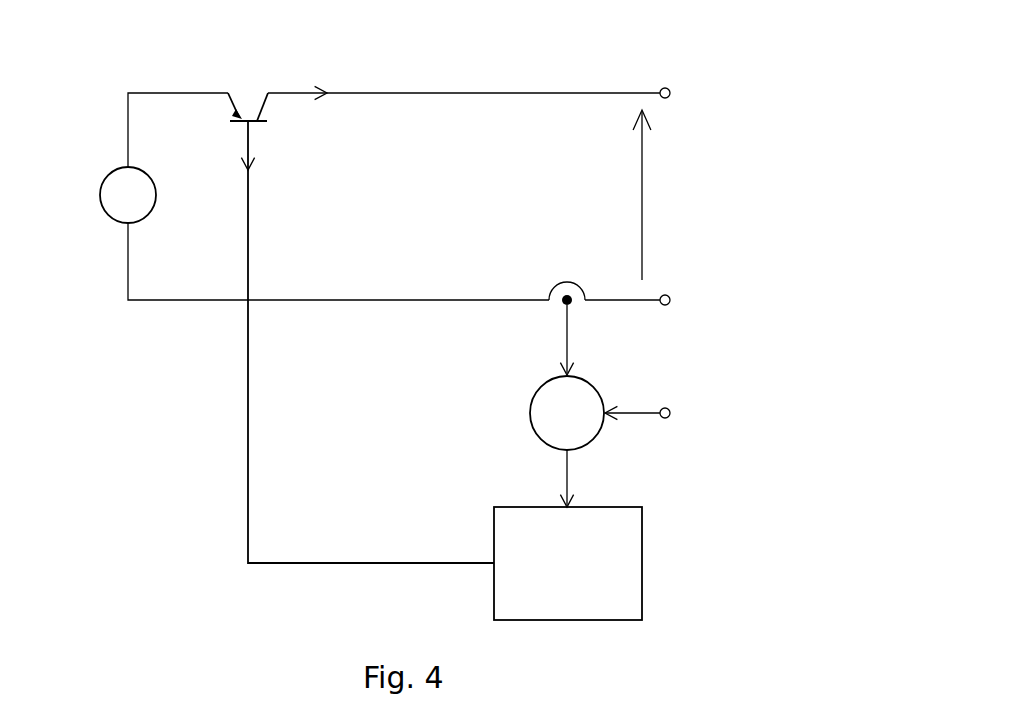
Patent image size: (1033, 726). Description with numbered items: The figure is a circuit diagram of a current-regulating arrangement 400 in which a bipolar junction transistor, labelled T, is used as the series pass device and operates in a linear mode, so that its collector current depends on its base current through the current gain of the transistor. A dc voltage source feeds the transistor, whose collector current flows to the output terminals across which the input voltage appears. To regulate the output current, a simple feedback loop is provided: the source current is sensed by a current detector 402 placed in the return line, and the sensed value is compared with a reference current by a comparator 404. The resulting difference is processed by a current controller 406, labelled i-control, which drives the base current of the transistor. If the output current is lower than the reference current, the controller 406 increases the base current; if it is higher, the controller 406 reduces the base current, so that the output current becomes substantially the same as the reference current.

The current regulating circuit 400 is at (453, 336).
The current detector 402 is at (600, 318).
The comparator 404 is at (610, 440).
The current controller 406 is at (620, 593).